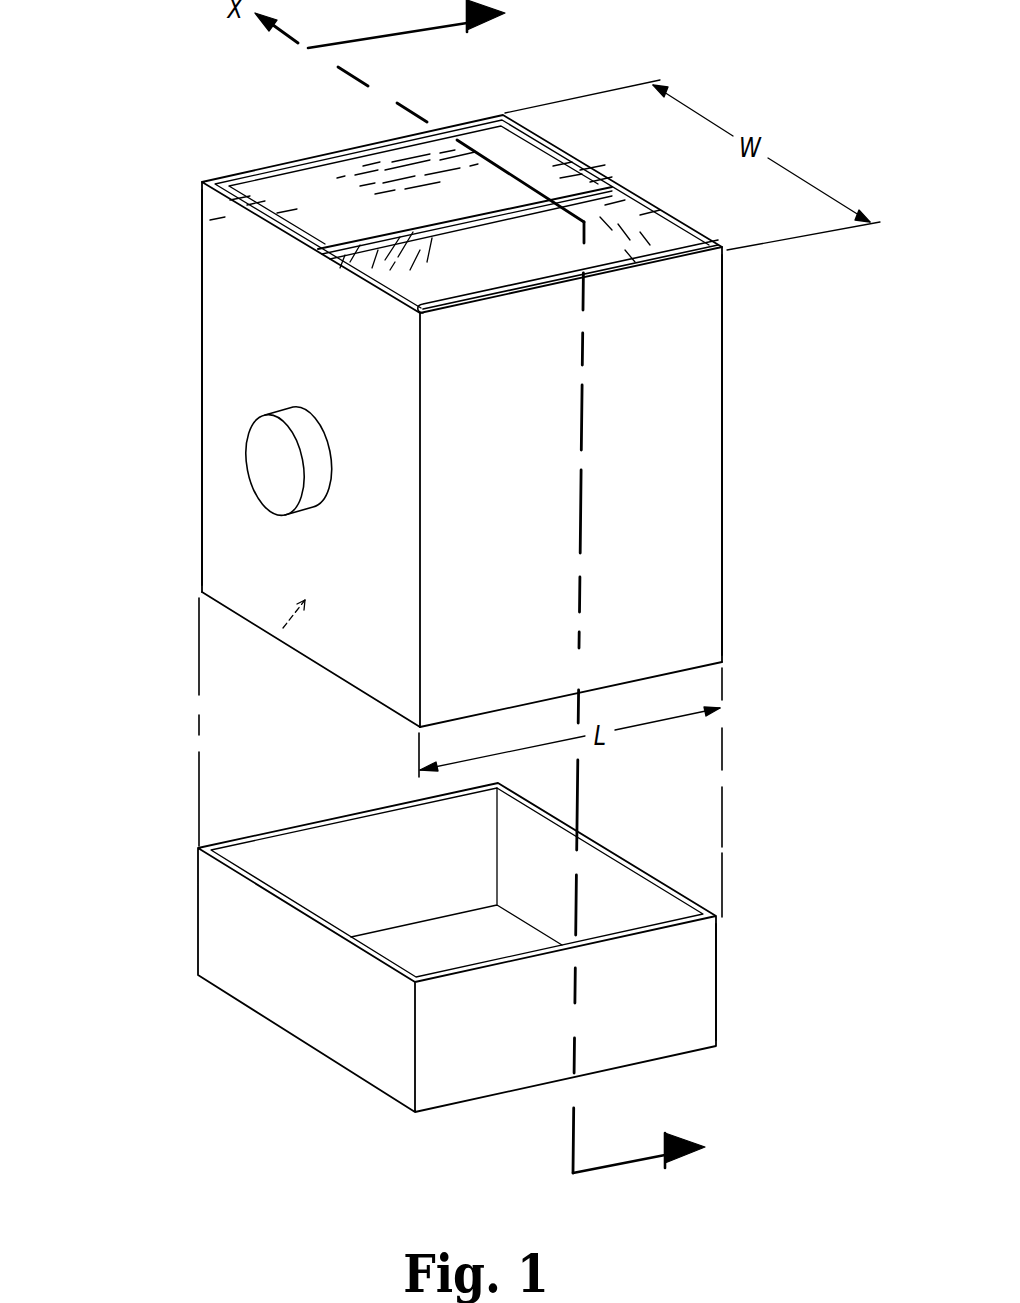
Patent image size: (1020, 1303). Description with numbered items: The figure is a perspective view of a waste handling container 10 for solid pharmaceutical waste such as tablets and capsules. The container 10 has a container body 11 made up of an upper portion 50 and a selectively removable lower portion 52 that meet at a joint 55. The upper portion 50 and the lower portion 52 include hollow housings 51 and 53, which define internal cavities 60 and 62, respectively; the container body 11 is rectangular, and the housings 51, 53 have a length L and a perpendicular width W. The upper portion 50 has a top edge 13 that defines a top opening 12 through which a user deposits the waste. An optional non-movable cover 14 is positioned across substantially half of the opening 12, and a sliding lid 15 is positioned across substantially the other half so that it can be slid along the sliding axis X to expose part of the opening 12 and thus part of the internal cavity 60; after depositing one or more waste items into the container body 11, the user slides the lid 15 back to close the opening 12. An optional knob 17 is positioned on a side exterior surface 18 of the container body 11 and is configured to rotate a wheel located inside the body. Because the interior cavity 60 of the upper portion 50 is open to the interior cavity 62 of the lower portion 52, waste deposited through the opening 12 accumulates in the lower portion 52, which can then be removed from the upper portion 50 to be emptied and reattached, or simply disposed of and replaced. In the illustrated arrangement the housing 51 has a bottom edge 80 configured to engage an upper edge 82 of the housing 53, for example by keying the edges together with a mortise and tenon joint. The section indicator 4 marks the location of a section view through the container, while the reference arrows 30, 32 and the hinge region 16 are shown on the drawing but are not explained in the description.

The section line indicator for FIG. 4 is at (515, 586).
The container 10 is at (93, 115).
The container body 11 is at (126, 418).
The top opening 12 is at (668, 232).
The top edge 13 is at (205, 181).
The non-movable cover 14 is at (523, 130).
The sliding lid 15 is at (637, 210).
The front lip 16 is at (698, 247).
The knob 17 is at (250, 447).
The side exterior surface 18 is at (232, 312).
The first direction 30 is at (616, 143).
The second direction 32 is at (768, 217).
The upper portion 50 is at (778, 498).
The hollow housing 51 is at (725, 427).
The lower portion 52 is at (772, 973).
The hollow housing 53 is at (720, 1000).
The joint 55 is at (698, 672).
The internal cavity 60 is at (280, 632).
The internal cavity 62 is at (305, 858).
The bottom edge 80 is at (357, 692).
The upper edge 82 is at (385, 953).